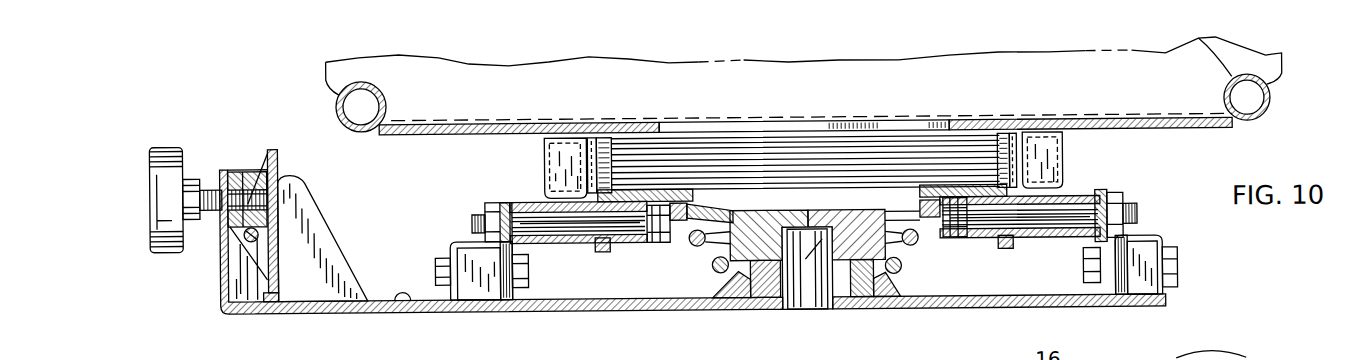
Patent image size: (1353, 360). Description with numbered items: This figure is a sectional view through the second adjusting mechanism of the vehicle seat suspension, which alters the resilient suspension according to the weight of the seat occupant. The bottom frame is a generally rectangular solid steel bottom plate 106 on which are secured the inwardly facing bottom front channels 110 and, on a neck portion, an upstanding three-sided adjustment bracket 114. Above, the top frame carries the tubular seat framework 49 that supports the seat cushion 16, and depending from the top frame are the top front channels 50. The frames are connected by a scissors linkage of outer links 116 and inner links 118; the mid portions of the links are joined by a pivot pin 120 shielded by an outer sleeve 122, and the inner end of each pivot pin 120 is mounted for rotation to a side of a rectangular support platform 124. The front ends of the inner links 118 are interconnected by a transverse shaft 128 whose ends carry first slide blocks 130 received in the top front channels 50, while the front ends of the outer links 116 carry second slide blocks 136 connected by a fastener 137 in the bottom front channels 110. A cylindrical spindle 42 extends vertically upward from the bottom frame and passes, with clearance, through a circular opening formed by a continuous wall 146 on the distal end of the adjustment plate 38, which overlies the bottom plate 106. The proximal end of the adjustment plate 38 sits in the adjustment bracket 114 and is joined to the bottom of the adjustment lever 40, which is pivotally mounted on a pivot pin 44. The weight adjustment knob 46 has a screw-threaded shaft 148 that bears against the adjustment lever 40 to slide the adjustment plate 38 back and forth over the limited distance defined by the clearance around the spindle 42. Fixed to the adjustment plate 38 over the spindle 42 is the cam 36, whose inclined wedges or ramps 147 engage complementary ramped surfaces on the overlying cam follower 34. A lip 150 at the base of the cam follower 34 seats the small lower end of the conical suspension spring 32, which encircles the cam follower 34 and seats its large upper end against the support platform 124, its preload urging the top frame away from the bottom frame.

The seat cushion 16 is at (1070, 53).
The suspension spring 32 is at (693, 250).
The cam follower 34 is at (882, 242).
The cam 36 is at (853, 308).
The adjustment plate 38 is at (390, 310).
The adjustment lever 40 is at (278, 166).
The cylindrical spindle 42 is at (810, 294).
The pivot pin 44 is at (247, 233).
The weight adjustment knob 46 is at (160, 145).
The tubular seat framework 49 is at (1266, 122).
The top front channel 50 is at (553, 172).
The bottom plate 106 is at (407, 294).
The bottom front channel 110 is at (460, 240).
The adjustment bracket 114 is at (318, 234).
The outer link 116 is at (510, 296).
The inner link 118 is at (615, 120).
The pivot pin 120 is at (618, 219).
The outer sleeve 122 is at (568, 246).
The support platform 124 is at (667, 188).
The transverse shaft 128 is at (893, 159).
The first slide block 130 is at (583, 145).
The second slide block 136 is at (470, 280).
The fastener 137 is at (435, 270).
The continuous wall 146 is at (767, 308).
The inclined wedges or ramps 147 is at (707, 307).
The shaft 148 is at (210, 188).
The lip 150 is at (907, 275).